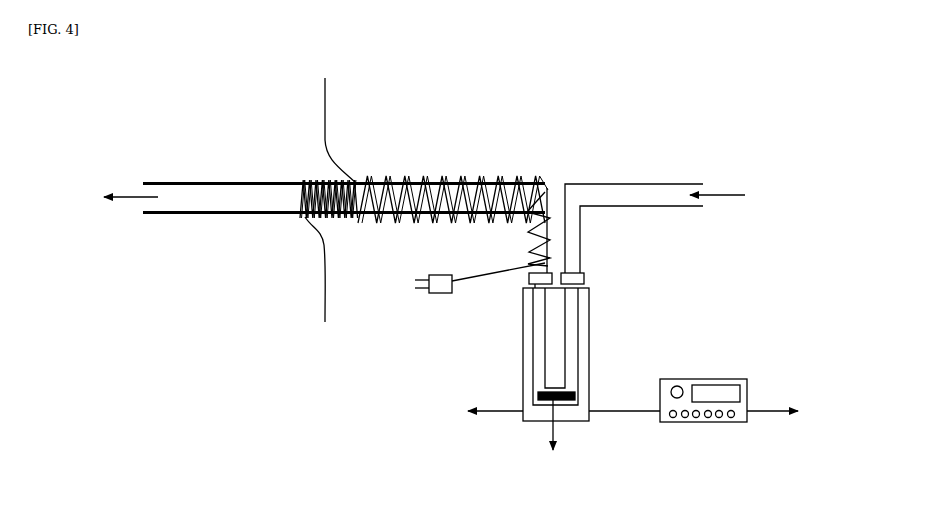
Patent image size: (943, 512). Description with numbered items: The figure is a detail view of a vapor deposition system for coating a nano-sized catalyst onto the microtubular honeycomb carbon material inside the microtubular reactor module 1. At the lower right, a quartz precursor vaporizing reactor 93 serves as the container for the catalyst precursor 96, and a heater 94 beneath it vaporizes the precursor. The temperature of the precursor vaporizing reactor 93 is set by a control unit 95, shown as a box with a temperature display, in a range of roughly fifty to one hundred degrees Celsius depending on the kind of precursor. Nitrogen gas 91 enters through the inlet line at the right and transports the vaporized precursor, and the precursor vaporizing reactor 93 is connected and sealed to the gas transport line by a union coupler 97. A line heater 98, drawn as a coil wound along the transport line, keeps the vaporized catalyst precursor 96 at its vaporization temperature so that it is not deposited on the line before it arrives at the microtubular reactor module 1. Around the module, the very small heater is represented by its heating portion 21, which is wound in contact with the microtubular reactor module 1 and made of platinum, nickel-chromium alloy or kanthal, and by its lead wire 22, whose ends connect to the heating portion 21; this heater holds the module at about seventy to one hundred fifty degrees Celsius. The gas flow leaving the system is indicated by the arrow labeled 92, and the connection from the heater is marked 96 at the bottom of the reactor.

The microtubular reactor module 1 is at (305, 220).
The heating portion 21 is at (357, 184).
The lead wire 22 is at (323, 122).
The gas 91 is at (679, 228).
The gas outlet 92 is at (101, 197).
The precursor vaporizing reactor 93 is at (571, 342).
The heater 94 is at (478, 412).
The control unit 95 is at (713, 402).
The catalyst precursor 96 is at (554, 442).
The union coupler 97 is at (570, 280).
The line heater 98 is at (496, 175).